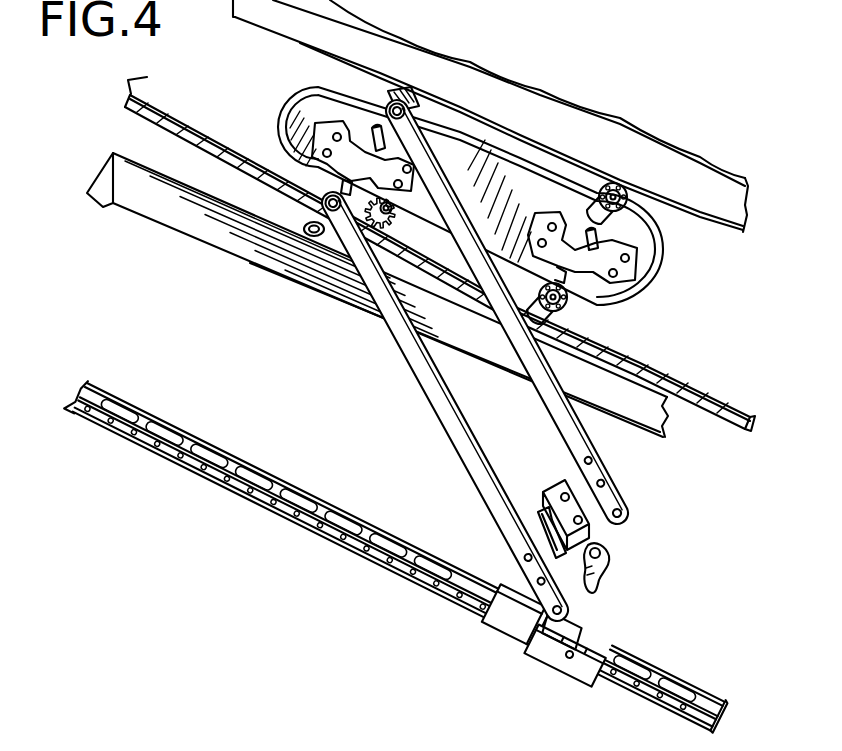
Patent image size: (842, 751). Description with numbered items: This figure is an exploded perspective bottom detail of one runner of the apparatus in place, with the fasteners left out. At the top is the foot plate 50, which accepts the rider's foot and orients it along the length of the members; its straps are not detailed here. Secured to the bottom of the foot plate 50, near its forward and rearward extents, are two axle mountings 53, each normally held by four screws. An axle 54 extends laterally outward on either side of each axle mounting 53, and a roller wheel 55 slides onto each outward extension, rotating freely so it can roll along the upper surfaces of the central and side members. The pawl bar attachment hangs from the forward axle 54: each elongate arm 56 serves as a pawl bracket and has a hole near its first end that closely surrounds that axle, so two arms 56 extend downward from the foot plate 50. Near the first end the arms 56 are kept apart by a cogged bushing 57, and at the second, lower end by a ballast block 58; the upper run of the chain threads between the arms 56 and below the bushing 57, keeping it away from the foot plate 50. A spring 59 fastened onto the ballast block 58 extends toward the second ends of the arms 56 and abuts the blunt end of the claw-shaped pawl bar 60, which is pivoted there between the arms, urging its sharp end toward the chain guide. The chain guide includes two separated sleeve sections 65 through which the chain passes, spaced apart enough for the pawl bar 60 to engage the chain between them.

The foot plate 50 is at (668, 250).
The axle mounting 53 is at (598, 282).
The axle 54 is at (574, 288).
The roller wheel 55 is at (565, 312).
The elongate arm 56 is at (563, 430).
The cogged bushing 57 is at (403, 210).
The ballast block 58 is at (546, 492).
The spring 59 is at (548, 544).
The pawl bar 60 is at (612, 562).
The sleeve section 65 is at (633, 688).